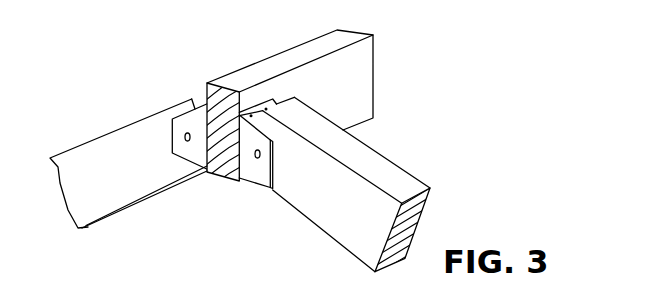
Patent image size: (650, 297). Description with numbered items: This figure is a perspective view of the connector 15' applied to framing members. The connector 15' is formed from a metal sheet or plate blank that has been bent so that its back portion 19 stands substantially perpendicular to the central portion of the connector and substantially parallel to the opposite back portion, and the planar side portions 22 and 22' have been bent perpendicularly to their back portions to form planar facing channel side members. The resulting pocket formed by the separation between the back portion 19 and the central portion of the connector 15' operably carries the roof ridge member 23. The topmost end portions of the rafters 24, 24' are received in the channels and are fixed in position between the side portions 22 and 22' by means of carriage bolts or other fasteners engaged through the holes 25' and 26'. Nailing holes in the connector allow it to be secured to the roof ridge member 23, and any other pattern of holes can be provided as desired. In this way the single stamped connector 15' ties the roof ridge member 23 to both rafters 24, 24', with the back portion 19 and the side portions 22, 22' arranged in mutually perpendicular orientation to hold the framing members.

The back portion 19 is at (258, 110).
The roof ridge member 23 is at (370, 73).
The rafter 24 is at (128, 145).
The rafter 24' is at (380, 195).
The planar side portion 22 is at (262, 178).
The planar side portion 22' is at (157, 150).
The hole 25' is at (288, 169).
The hole 26' is at (167, 188).
The connector 15' is at (211, 201).